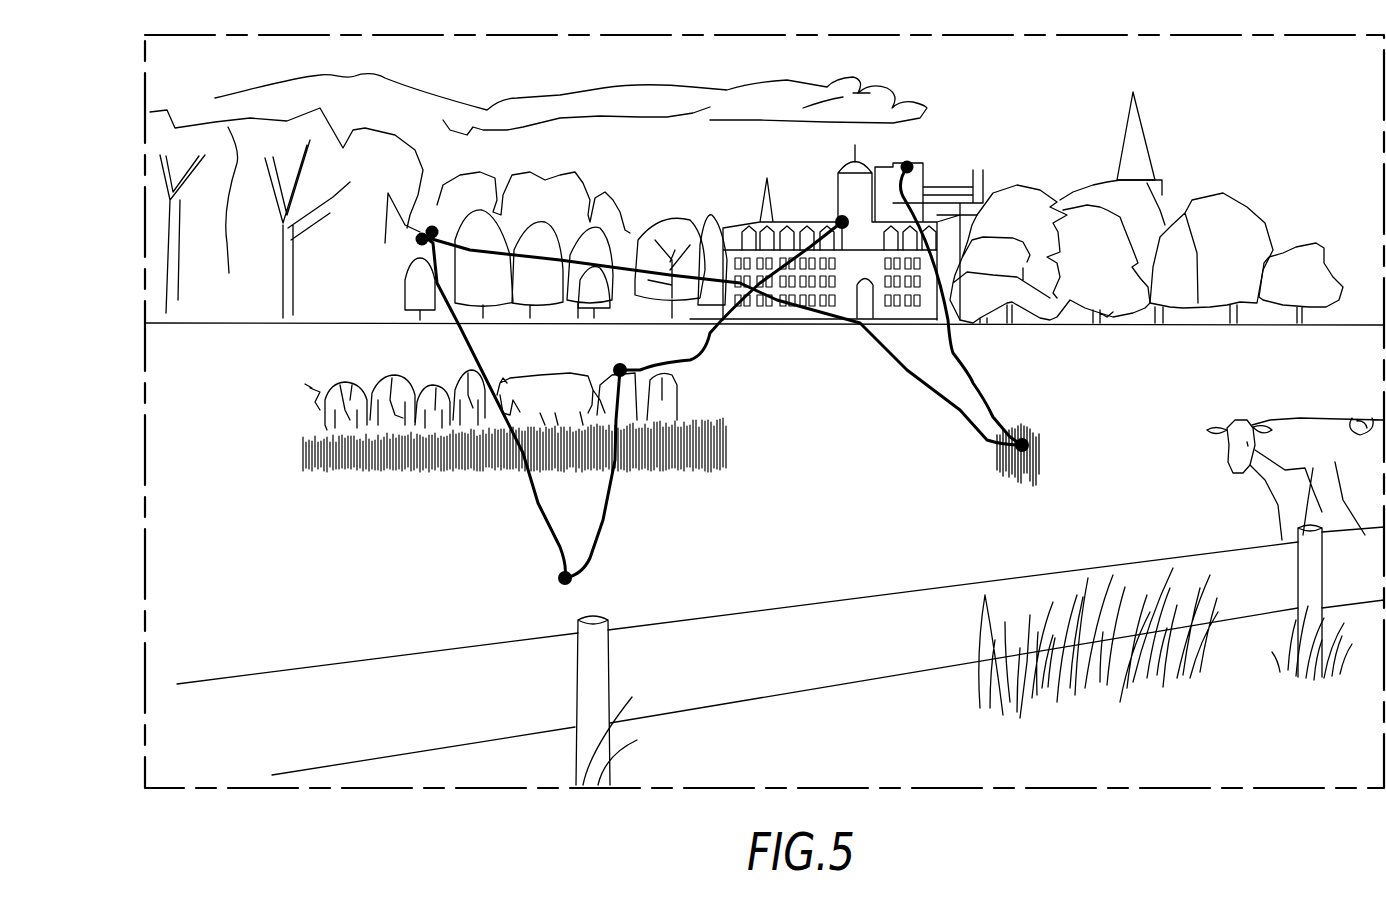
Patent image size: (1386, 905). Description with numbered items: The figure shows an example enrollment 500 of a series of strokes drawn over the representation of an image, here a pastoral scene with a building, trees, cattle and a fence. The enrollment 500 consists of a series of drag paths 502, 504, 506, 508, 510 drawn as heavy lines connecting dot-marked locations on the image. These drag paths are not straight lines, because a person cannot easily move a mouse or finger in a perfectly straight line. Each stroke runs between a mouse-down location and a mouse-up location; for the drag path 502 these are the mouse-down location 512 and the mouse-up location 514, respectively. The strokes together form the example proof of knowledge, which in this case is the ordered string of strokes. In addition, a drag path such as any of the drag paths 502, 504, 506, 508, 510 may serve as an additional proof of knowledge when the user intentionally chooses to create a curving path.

The enrollment 500 is at (127, 518).
The drag path 502 is at (702, 348).
The drag path 504 is at (603, 505).
The drag path 506 is at (537, 510).
The drag path 508 is at (905, 370).
The drag path 510 is at (973, 383).
The mouse-down location 512 is at (842, 222).
The mouse-up location 514 is at (615, 363).